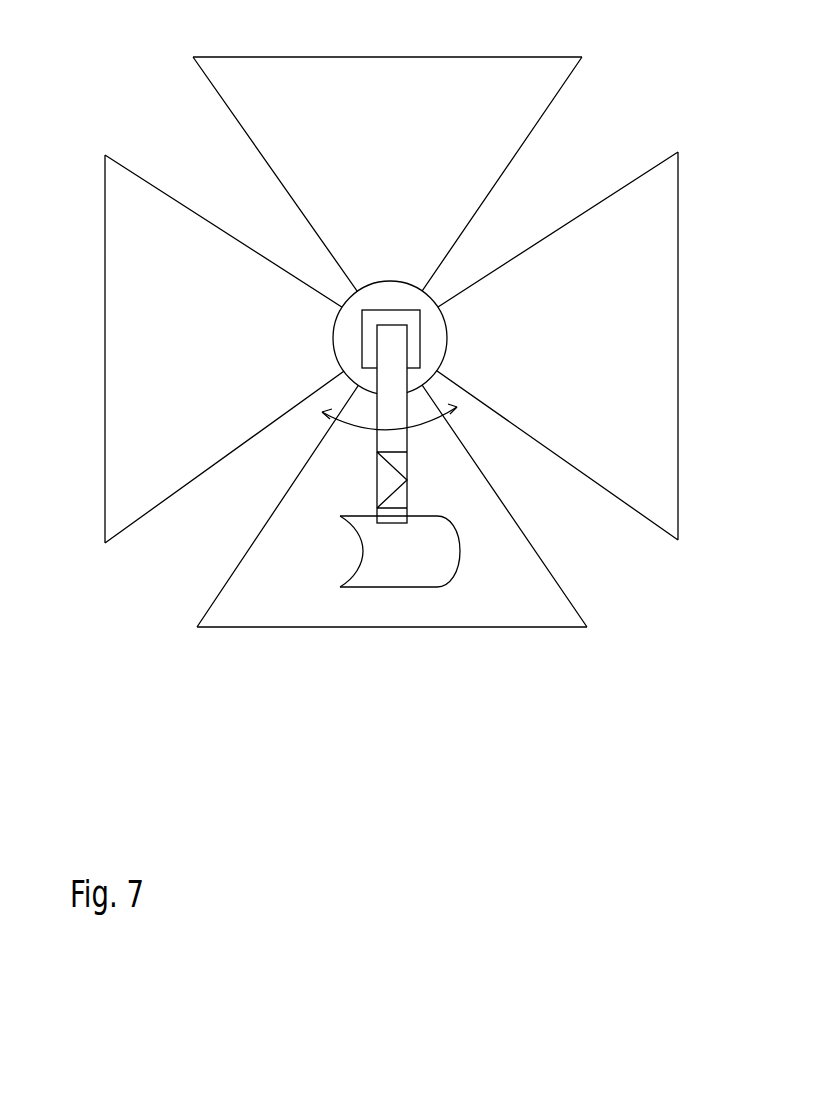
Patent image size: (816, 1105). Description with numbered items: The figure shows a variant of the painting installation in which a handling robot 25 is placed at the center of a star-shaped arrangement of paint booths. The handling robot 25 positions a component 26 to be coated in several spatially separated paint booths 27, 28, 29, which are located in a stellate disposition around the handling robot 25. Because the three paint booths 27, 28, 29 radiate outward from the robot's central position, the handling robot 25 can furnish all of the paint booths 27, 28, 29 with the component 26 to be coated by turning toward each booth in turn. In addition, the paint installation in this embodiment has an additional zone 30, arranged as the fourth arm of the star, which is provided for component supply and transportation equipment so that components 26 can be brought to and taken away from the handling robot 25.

The handling robot 25 is at (428, 440).
The component 26 is at (447, 563).
The paint booth 27 is at (280, 628).
The paint booth 28 is at (680, 212).
The paint booth 29 is at (278, 57).
The additional zone 30 is at (104, 226).